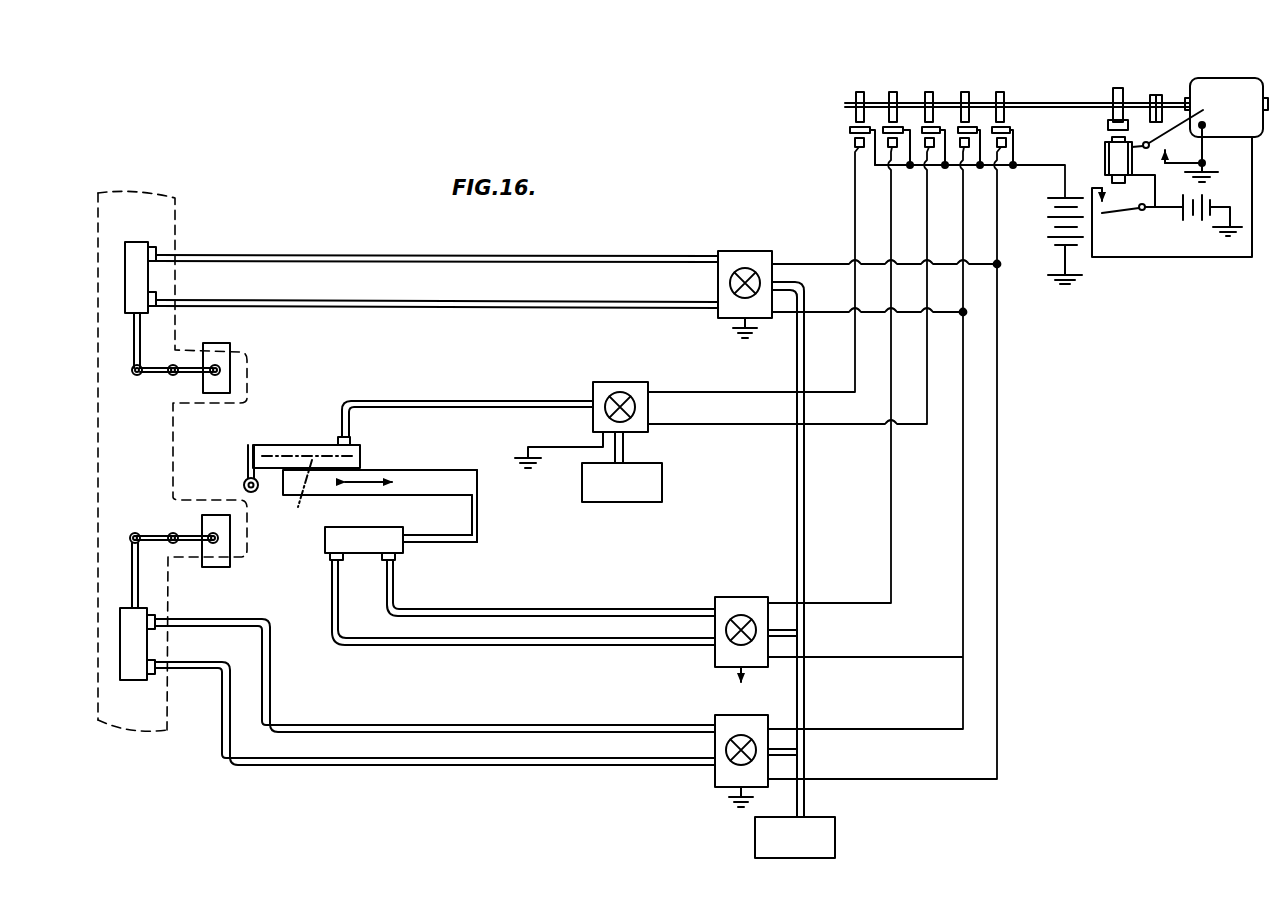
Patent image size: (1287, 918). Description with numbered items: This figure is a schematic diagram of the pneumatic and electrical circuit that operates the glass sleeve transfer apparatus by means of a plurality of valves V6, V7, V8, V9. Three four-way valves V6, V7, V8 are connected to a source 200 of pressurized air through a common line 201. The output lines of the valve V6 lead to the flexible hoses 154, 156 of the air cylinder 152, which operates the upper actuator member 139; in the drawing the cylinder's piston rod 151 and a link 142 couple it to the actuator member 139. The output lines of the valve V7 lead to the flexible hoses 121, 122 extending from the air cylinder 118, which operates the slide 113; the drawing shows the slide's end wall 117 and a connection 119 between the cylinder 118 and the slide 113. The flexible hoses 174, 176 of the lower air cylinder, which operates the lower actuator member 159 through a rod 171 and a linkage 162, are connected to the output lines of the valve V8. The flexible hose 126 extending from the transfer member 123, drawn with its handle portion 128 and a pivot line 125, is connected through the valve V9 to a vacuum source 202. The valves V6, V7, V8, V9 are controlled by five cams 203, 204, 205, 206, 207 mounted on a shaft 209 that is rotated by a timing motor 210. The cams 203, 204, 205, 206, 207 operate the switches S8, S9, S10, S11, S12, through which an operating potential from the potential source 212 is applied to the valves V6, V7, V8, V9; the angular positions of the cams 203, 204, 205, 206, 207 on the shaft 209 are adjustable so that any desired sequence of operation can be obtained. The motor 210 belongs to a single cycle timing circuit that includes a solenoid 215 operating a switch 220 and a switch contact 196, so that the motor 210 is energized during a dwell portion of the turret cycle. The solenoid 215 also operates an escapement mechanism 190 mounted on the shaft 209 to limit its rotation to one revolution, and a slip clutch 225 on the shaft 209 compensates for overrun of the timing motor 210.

The air cylinder 152 is at (130, 257).
The piston rod 151 is at (131, 330).
The link 142 is at (156, 378).
The upper actuator member 139 is at (222, 375).
The flexible hose 156 is at (321, 240).
The flexible hose 154 is at (364, 308).
The linkage 162 is at (150, 523).
The lower actuator member 159 is at (222, 530).
The piston rod 171 is at (132, 574).
The flexible hose 174 is at (216, 608).
The flexible hose 176 is at (201, 668).
The transfer member 123 is at (274, 445).
The pickup handle 128 is at (249, 456).
The pivot line 125 is at (297, 495).
The slide 113 is at (405, 463).
The arm end wall 117 is at (479, 522).
The connecting line 119 is at (440, 545).
The air cylinder 118 is at (353, 533).
The flexible hose 121 is at (518, 609).
The flexible hose 122 is at (506, 646).
The flexible hose 126 is at (404, 404).
The vacuum source 202 is at (622, 503).
The common line 201 is at (805, 692).
The source of pressurized air 200 is at (833, 841).
The shaft 209 is at (845, 105).
The cam 203 is at (859, 91).
The cam 204 is at (893, 91).
The cam 205 is at (929, 92).
The cam 206 is at (965, 91).
The cam 207 is at (1000, 92).
The switch S8 is at (855, 142).
The switch S9 is at (887, 141).
The switch S10 is at (926, 163).
The switch S11 is at (962, 166).
The switch S12 is at (997, 166).
The potential source 212 is at (1044, 205).
The escapement mechanism 190 is at (1108, 89).
The slip clutch 225 is at (1153, 95).
The timing motor 210 is at (1226, 65).
The switch contact 196 is at (1195, 138).
The solenoid 215 is at (1105, 153).
The switch 220 is at (1122, 215).
The four-way valve V6 is at (728, 258).
The four-way valve V7 is at (741, 628).
The four-way valve V8 is at (741, 750).
The valve V9 is at (605, 385).